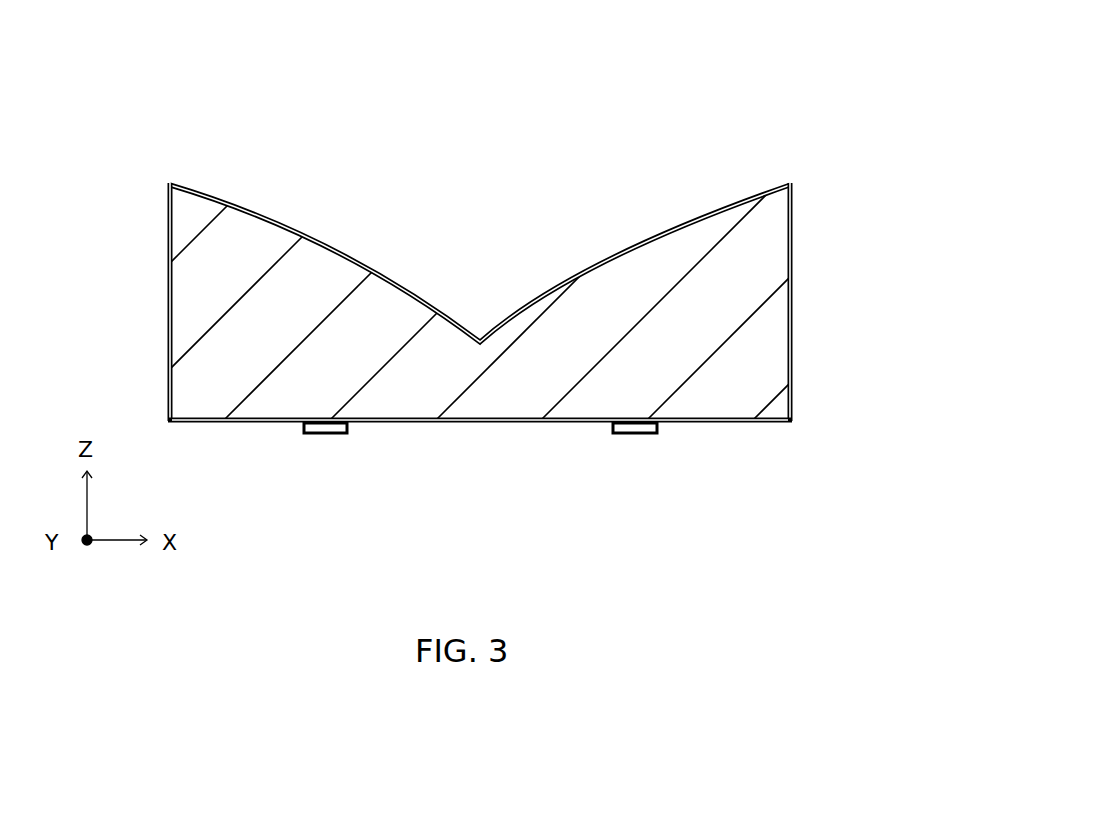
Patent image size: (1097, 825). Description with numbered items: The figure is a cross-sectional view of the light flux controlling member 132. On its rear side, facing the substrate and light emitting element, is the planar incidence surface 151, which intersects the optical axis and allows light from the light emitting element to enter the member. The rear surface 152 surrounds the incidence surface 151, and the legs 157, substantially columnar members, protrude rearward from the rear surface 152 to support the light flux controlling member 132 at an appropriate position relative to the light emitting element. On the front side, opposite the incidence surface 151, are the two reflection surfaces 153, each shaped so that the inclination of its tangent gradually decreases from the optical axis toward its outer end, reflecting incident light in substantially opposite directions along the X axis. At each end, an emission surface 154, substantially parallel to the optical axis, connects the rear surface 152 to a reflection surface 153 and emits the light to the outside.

The light flux controlling member 132 is at (492, 255).
The incidence surface 151 is at (492, 422).
The rear surface 152 is at (707, 423).
The reflection surface 153 is at (318, 240).
The emission surface 154 is at (168, 270).
The leg 157 is at (320, 435).